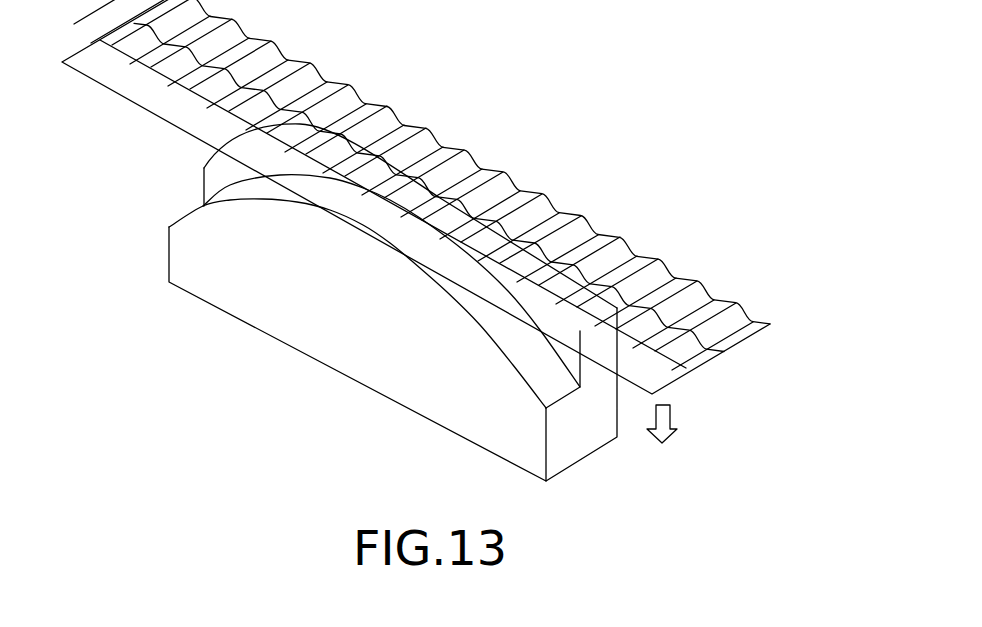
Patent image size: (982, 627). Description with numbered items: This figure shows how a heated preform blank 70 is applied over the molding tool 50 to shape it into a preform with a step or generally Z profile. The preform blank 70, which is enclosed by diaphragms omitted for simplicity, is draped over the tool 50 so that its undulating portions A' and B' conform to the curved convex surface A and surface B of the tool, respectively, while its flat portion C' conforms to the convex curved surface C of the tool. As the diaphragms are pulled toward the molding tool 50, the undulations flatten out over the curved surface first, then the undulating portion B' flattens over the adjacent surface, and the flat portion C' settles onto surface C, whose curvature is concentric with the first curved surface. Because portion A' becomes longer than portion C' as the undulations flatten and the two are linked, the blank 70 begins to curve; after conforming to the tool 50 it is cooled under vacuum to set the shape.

The preform blank 70 is at (543, 190).
The molding tool 50 is at (354, 313).
The undulating portion A' is at (795, 357).
The undulating portion B' is at (755, 382).
The flat portion C' is at (717, 412).
The convex curved surface C is at (604, 441).